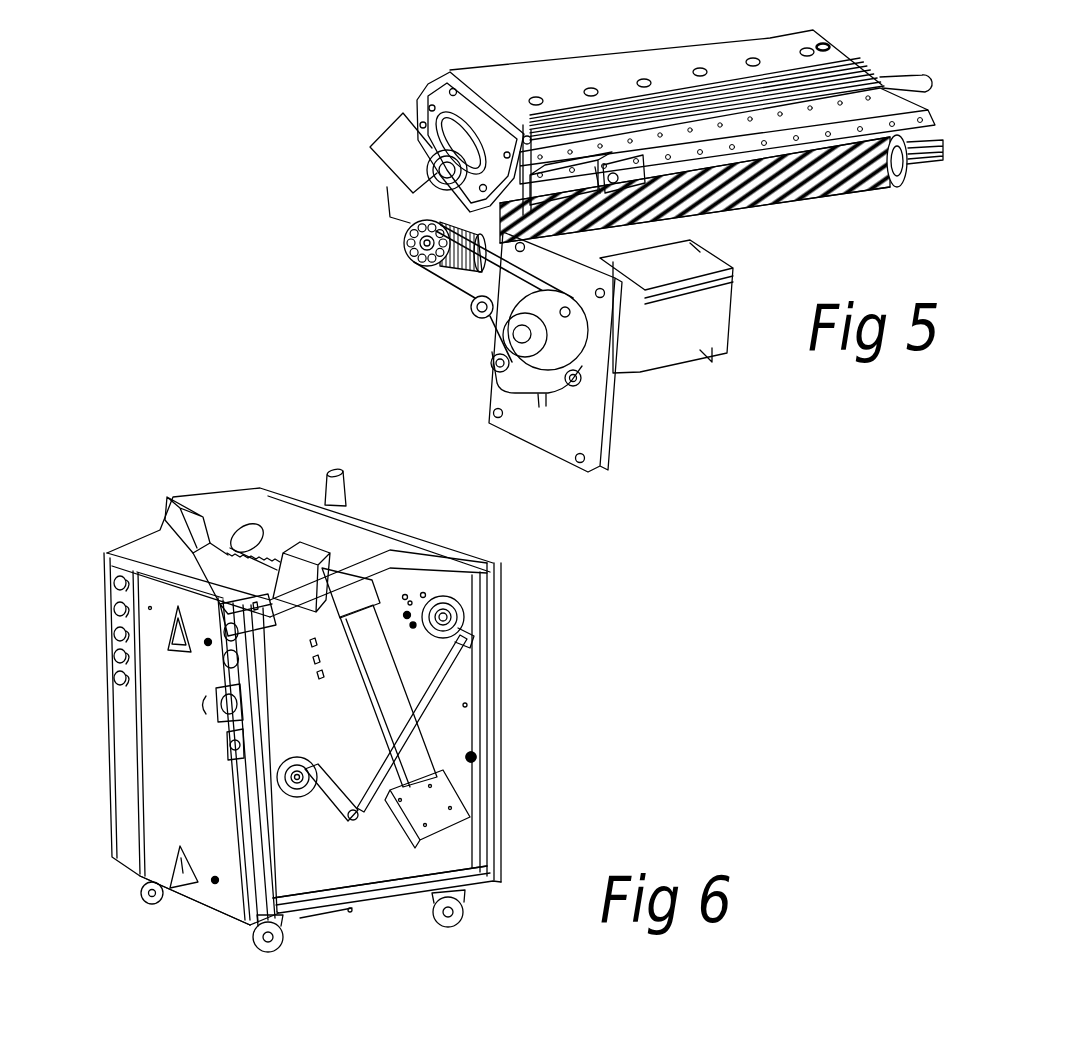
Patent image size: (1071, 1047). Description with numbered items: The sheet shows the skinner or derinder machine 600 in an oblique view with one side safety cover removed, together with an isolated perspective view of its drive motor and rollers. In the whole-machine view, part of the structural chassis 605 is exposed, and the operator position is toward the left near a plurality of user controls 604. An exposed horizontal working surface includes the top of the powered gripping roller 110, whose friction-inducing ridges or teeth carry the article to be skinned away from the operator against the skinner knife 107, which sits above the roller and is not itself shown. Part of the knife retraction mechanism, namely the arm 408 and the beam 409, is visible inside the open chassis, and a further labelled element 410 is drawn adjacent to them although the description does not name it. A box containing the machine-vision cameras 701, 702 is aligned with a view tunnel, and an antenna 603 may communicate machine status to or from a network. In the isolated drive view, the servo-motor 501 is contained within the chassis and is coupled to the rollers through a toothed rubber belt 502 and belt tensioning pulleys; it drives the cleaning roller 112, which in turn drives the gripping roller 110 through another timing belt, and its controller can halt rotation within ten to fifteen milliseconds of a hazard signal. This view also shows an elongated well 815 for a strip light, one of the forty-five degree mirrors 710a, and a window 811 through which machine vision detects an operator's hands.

In FIG. 5, the skinner knife 107 is at (830, 62).
In FIG. 5, the gripping roller 110 is at (868, 70).
In FIG. 6, the gripping roller 110 is at (253, 522).
In FIG. 5, the elongated well 815 is at (610, 147).
In FIG. 5, the window 811 is at (432, 97).
In FIG. 5, the mirror 710a is at (398, 135).
In FIG. 5, the toothed rubber belt 502 is at (460, 293).
In FIG. 5, the cleaning roller 112 is at (763, 203).
In FIG. 5, the motor 501 is at (712, 317).
In FIG. 6, the skinner or derinder machine 600 is at (163, 434).
In FIG. 6, the antenna 603 is at (337, 468).
In FIG. 6, the user controls 604 is at (110, 592).
In FIG. 6, the hub 410 is at (470, 620).
In FIG. 6, the beam 409 is at (446, 675).
In FIG. 6, the camera 701 is at (480, 800).
In FIG. 6, the camera 702 is at (478, 801).
In FIG. 6, the arm 408 is at (340, 812).
In FIG. 6, the structural chassis 605 is at (375, 870).